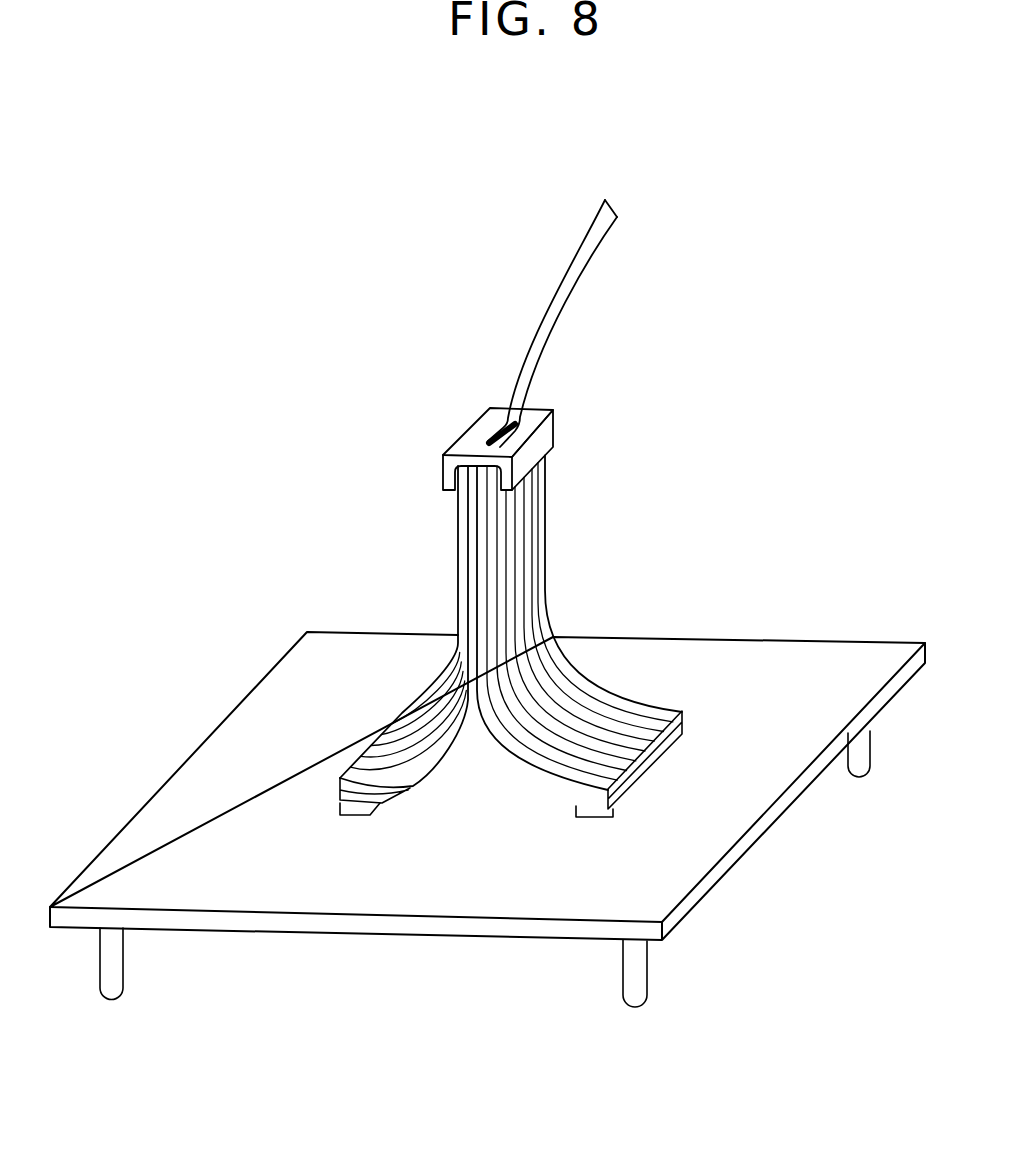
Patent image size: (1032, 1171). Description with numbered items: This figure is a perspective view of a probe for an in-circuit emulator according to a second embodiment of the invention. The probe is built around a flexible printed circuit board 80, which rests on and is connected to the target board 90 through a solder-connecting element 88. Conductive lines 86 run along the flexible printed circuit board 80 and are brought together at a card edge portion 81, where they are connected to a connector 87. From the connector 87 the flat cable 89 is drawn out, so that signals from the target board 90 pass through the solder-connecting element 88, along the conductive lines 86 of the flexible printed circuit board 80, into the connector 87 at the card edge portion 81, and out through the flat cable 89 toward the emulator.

The flexible printed circuit board 80 is at (415, 787).
The card edge portion 81 is at (552, 456).
The conductive lines 86 is at (604, 754).
The connector 87 is at (550, 428).
The solder-connecting element 88 is at (595, 814).
The flat cable 89 is at (558, 272).
The target board 90 is at (253, 712).